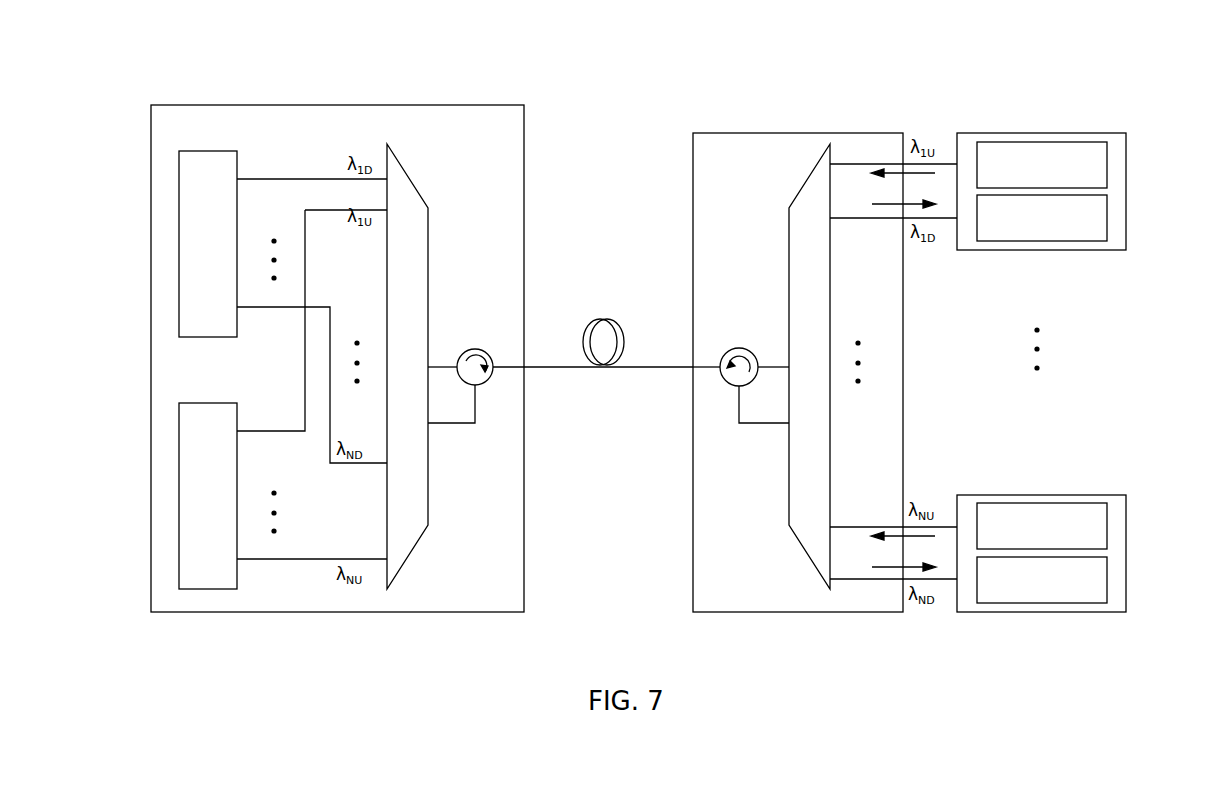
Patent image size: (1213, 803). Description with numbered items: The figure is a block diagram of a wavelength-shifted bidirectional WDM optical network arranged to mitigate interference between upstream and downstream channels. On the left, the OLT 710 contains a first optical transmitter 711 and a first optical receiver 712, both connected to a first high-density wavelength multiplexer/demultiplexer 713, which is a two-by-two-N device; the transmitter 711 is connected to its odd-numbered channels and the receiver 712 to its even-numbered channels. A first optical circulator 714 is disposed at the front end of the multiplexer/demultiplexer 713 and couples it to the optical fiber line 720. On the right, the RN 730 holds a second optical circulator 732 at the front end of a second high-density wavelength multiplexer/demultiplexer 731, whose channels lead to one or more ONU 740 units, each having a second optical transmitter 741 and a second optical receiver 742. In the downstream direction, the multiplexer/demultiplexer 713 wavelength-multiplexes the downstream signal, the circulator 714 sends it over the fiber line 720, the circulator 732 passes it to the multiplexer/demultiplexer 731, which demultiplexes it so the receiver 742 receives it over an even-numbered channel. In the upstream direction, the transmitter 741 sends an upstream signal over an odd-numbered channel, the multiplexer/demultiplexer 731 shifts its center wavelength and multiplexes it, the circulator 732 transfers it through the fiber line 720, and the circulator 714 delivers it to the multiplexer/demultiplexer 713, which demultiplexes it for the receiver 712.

The OLT 710 is at (298, 105).
The first optical transmitter 711 is at (208, 151).
The first optical receiver 712 is at (206, 589).
The first high-density wavelength multiplexer/demultiplexer 713 is at (403, 170).
The first optical circulator 714 is at (480, 355).
The optical fiber line 720 is at (607, 320).
The RN 730 is at (738, 133).
The second high-density wavelength multiplexer/demultiplexer 731 is at (807, 175).
The second optical circulator 732 is at (725, 384).
The ONU 740 is at (1035, 133).
The second optical transmitter 741 is at (1107, 165).
The second optical receiver 742 is at (1107, 218).